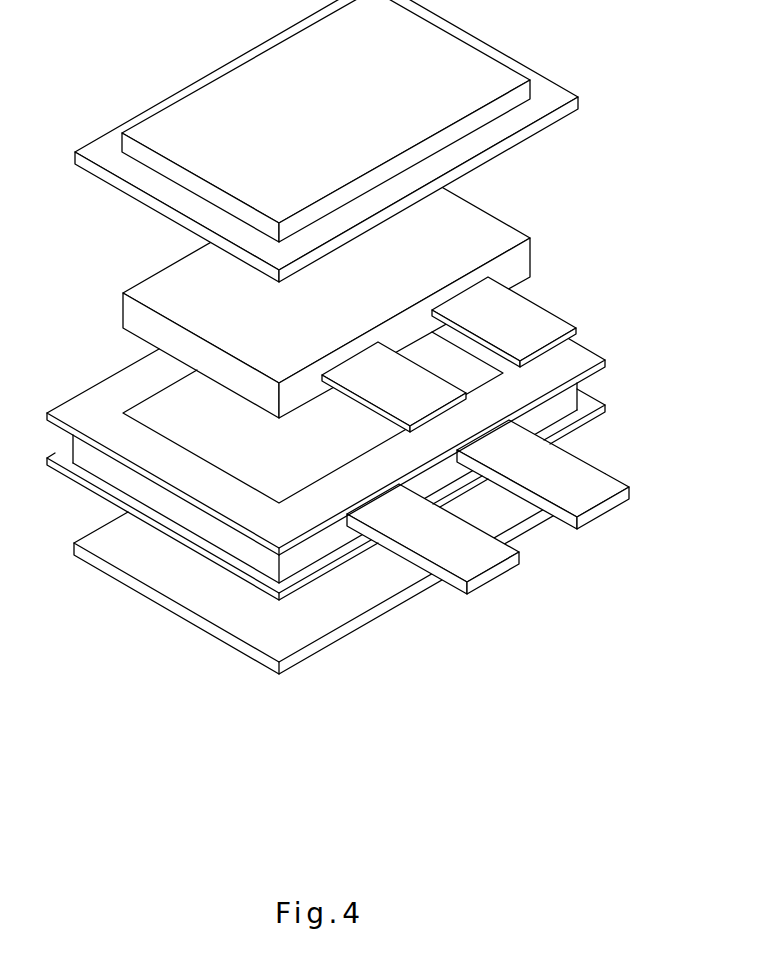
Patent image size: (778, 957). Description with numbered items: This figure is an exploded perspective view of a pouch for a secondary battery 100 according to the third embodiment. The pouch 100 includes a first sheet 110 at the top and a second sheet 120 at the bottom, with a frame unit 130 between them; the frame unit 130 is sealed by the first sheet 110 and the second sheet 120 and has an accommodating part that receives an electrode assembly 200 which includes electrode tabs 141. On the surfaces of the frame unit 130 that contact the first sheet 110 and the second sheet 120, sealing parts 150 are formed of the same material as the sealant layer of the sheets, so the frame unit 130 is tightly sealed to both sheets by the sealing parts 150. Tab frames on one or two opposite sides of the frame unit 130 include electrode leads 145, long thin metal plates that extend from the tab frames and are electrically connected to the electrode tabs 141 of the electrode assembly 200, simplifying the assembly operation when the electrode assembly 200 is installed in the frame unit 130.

The pouch for a secondary battery 100 is at (397, 348).
The first sheet 110 is at (377, 141).
The second sheet 120 is at (518, 523).
The frame unit 130 is at (573, 400).
The electrode tabs 141 is at (375, 386).
The electrode leads 145 is at (487, 562).
The sealing parts 150 is at (593, 358).
The electrode assembly 200 is at (158, 281).